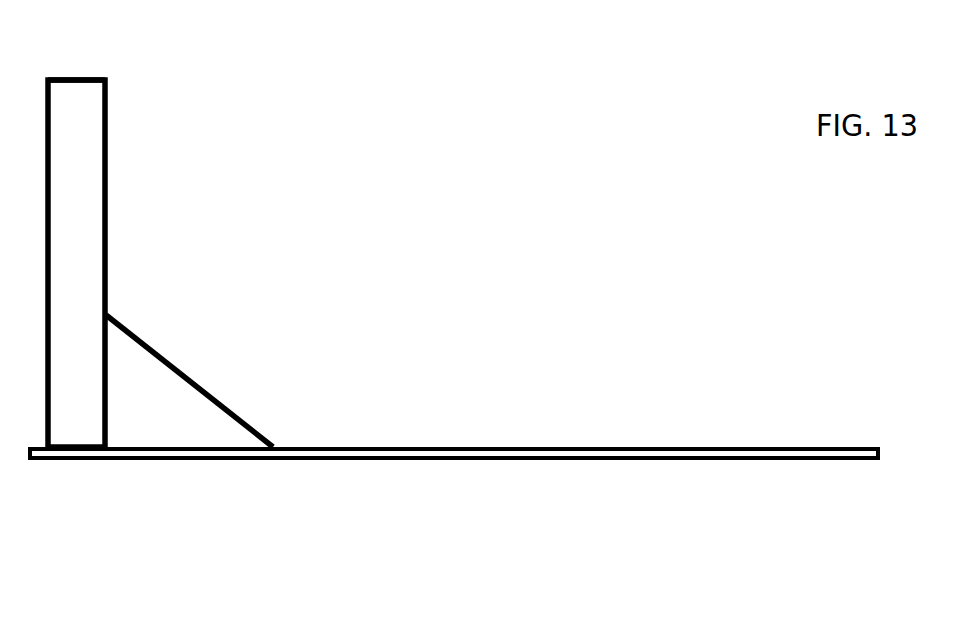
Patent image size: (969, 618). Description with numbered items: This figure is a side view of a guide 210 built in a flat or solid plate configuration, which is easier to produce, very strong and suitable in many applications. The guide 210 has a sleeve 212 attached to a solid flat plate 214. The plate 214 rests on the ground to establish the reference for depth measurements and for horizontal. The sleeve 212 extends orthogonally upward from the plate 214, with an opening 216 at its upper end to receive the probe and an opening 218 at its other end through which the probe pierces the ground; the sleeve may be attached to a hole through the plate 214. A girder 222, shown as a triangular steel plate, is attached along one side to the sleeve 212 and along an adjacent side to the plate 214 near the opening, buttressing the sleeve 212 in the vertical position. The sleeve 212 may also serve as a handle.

The guide 210 is at (431, 232).
The sleeve 212 is at (87, 194).
The solid flat plate 214 is at (462, 447).
The opening 216 is at (87, 79).
The opening 218 is at (78, 460).
The girder 222 is at (147, 407).